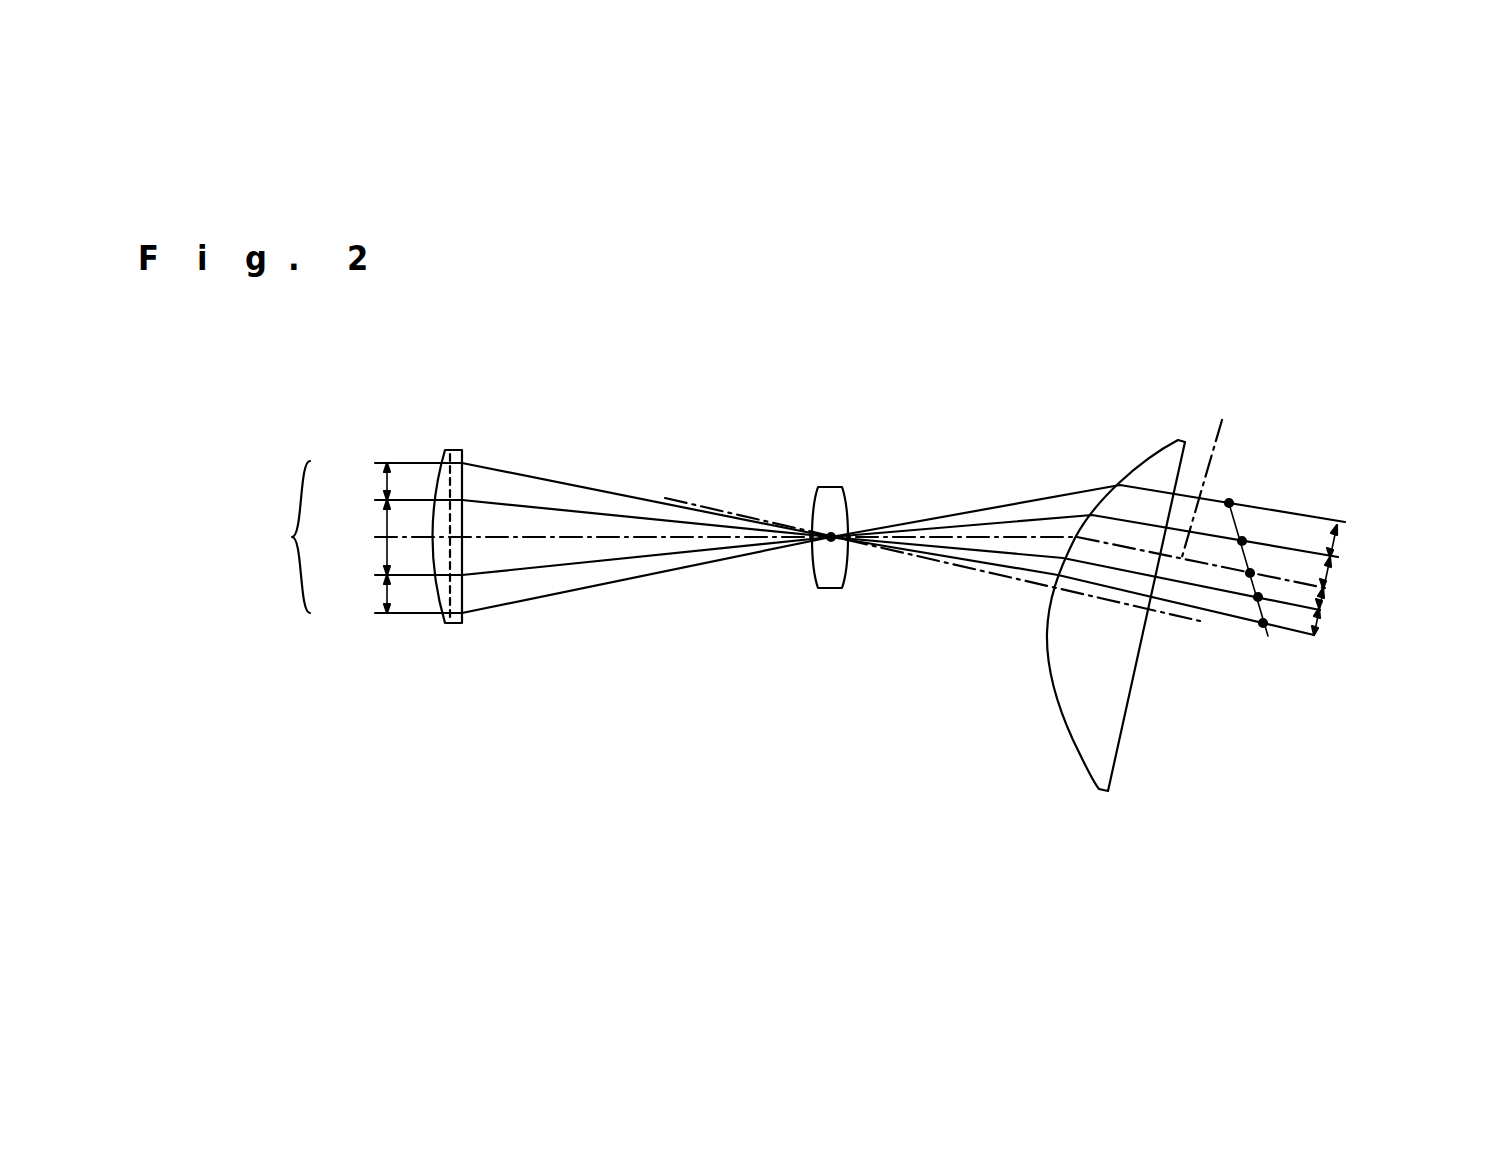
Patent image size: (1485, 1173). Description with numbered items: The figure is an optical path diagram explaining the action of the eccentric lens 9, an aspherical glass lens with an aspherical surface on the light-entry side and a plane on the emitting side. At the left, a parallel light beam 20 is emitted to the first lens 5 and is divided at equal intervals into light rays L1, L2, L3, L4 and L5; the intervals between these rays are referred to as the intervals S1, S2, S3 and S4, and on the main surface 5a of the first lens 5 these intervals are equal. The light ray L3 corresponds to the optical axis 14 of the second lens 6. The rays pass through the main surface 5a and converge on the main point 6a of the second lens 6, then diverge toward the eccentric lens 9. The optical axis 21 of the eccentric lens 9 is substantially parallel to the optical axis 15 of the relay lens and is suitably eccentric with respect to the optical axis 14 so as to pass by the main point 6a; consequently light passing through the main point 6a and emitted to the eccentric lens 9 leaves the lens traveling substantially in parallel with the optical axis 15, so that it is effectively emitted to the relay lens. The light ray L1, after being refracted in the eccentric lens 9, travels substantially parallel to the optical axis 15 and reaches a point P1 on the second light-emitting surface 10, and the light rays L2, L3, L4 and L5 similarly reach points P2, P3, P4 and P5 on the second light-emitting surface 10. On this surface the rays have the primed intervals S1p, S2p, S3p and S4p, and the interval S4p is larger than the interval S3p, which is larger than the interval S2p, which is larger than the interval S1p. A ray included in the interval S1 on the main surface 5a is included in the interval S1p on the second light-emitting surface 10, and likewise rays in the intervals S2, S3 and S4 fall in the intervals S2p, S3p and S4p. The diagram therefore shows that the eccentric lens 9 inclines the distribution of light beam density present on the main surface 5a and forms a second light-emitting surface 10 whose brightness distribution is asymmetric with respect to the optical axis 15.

The parallel light beam 20 is at (316, 537).
The interval between divided light rays S1 is at (384, 466).
The interval between divided light rays S2 is at (384, 508).
The interval between divided light rays S3 is at (384, 565).
The interval between divided light rays S4 is at (384, 602).
The light ray L1 is at (418, 461).
The light ray L2 is at (400, 498).
The light ray L3 is at (422, 540).
The light ray L4 is at (412, 578).
The light ray L5 is at (395, 615).
The first lens 5 is at (455, 449).
The main surface 5a is at (453, 592).
The optical axis 14 is at (579, 540).
The second lens 6 is at (826, 484).
The main point 6a is at (835, 533).
The optical axis 21 is at (1000, 572).
The eccentric lens 9 is at (1095, 783).
The optical axis 15 is at (1208, 469).
The second light-emitting surface 10 is at (1262, 606).
The point P1 is at (1263, 626).
The point P2 is at (1260, 600).
The point P3 is at (1253, 571).
The point P4 is at (1244, 539).
The point P5 is at (1231, 501).
The interval on second light-emitting surface S4p is at (1340, 527).
The interval on second light-emitting surface S3p is at (1330, 567).
The interval on second light-emitting surface S2p is at (1318, 606).
The interval on second light-emitting surface S1p is at (1312, 643).